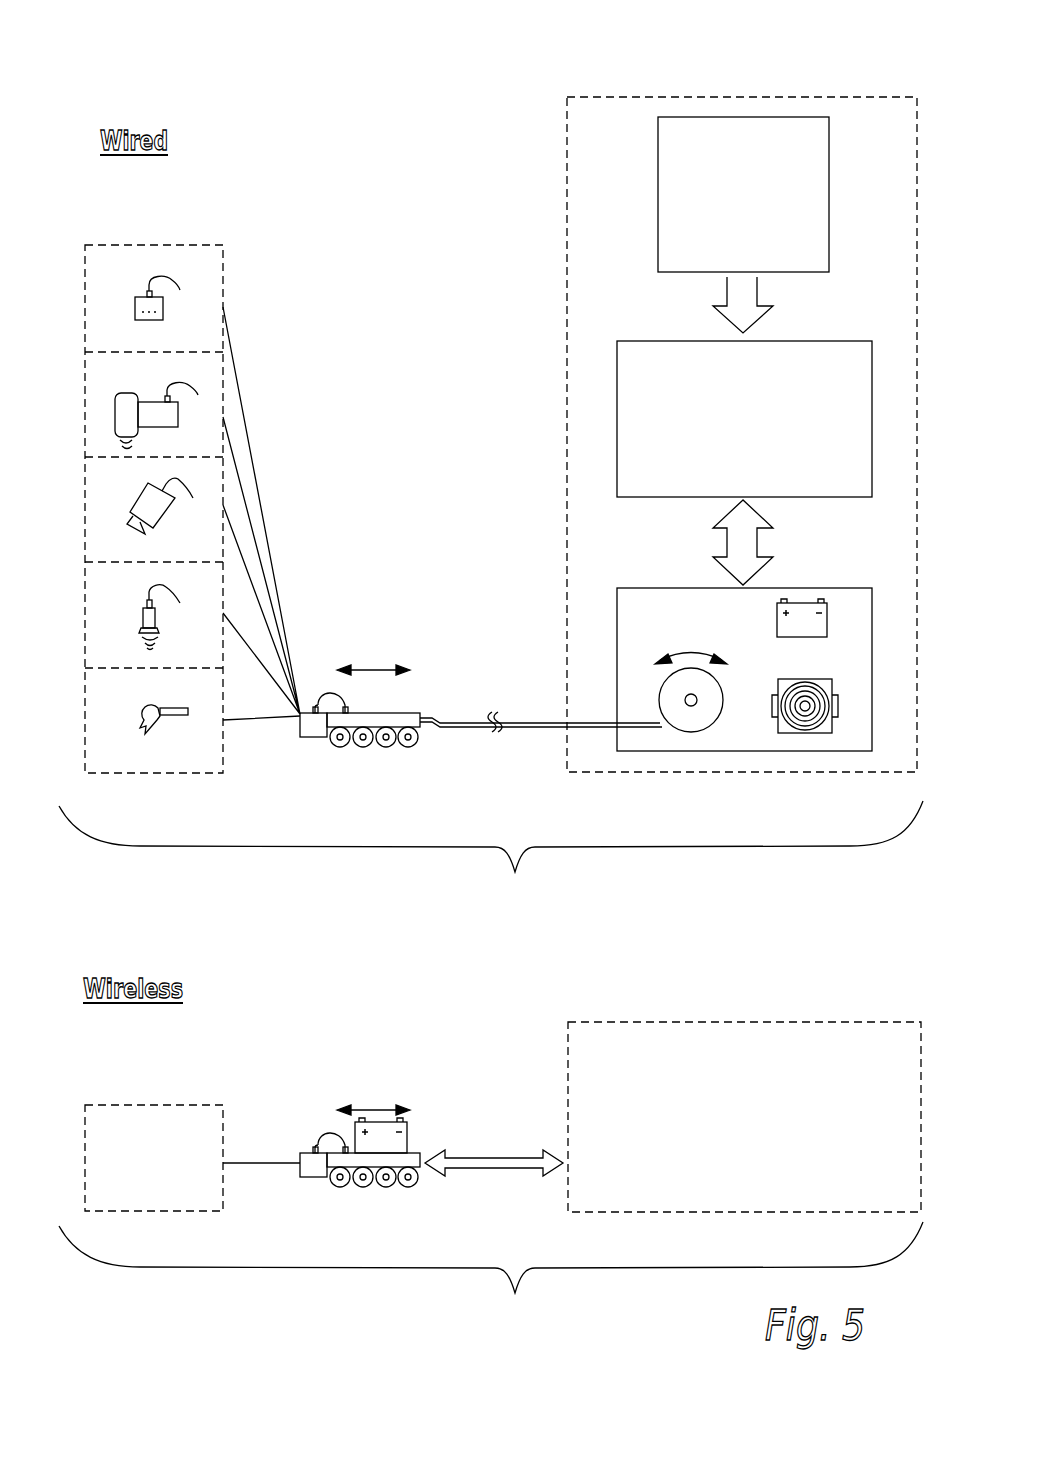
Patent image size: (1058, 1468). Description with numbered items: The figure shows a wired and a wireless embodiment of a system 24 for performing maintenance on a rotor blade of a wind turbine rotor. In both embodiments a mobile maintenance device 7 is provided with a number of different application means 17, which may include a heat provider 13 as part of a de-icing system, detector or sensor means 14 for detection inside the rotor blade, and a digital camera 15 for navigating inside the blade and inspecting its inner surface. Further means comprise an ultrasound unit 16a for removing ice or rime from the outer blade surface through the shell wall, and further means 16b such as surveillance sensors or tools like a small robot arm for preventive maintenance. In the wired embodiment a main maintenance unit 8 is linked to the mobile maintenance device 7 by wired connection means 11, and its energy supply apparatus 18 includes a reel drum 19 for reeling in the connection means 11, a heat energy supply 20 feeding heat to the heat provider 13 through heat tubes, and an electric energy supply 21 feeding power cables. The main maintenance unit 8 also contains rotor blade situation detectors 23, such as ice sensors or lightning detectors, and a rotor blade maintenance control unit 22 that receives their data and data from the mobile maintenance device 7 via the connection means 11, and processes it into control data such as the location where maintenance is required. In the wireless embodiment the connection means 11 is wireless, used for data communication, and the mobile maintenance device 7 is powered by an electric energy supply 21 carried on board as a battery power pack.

The mobile maintenance device 7 is at (395, 748).
The main maintenance unit 8 is at (752, 88).
The connection means 11 is at (528, 728).
The heat provider 13 is at (102, 672).
The detector or sensor means 14 is at (102, 583).
The digital camera 15 is at (102, 488).
The ultrasound unit 16a is at (102, 396).
The further means 16b is at (102, 300).
The application means 17 is at (155, 240).
The energy supply apparatus 18 is at (617, 628).
The reel drum 19 is at (700, 732).
The heat energy supply 20 is at (832, 690).
The electric energy supply 21 is at (827, 622).
The rotor blade maintenance control unit 22 is at (617, 440).
The rotor blade situation detectors 23 is at (658, 210).
The system 24 is at (522, 880).